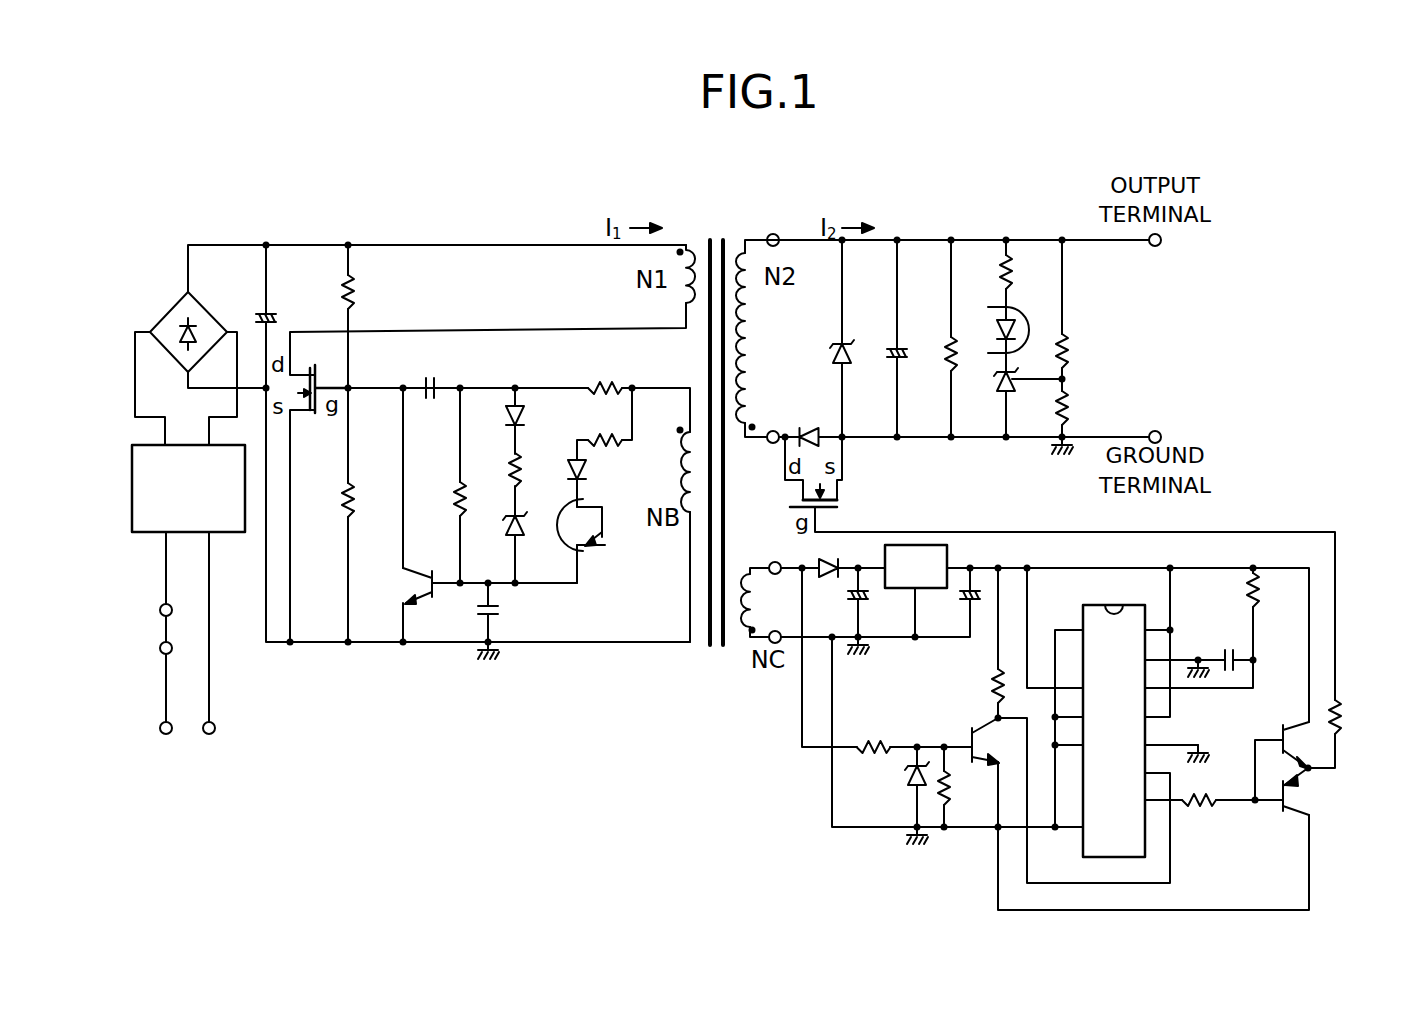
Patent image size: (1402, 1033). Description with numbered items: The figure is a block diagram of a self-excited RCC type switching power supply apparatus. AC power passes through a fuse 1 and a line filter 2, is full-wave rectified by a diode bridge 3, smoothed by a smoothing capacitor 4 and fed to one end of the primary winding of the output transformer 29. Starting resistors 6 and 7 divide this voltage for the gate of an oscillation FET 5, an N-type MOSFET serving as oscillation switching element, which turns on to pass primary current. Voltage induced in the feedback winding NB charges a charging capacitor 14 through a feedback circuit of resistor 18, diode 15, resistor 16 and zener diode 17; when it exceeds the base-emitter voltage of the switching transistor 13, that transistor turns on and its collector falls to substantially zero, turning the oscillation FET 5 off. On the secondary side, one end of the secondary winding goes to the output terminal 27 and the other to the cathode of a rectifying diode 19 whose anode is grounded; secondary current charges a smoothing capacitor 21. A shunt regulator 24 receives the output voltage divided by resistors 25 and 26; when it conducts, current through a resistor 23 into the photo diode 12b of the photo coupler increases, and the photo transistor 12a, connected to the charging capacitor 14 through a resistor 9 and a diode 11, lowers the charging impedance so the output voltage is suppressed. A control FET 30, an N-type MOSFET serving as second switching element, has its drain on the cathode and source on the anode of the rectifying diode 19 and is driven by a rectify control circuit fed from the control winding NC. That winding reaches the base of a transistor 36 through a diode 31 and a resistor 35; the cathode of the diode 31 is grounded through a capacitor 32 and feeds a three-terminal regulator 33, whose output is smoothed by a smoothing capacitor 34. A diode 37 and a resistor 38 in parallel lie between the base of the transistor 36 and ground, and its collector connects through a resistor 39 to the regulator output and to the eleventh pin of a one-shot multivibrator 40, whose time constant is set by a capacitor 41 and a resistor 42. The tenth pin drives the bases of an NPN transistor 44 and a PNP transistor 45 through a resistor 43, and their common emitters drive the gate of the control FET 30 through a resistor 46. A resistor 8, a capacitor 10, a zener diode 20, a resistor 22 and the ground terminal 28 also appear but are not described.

The fuse 1 is at (172, 628).
The line filter 2 is at (228, 533).
The diode bridge 3 is at (205, 312).
The smoothing capacitor 4 is at (272, 312).
The oscillation FET 5 is at (300, 415).
The starting resistor 6 is at (360, 292).
The starting resistor 7 is at (345, 518).
The resistor 8 is at (603, 372).
The resistor 9 is at (598, 425).
The capacitor 10 is at (428, 376).
The diode 11 is at (590, 470).
The photo transistor 12a is at (605, 548).
The photo diode 12b is at (1020, 323).
The switching transistor 13 is at (408, 574).
The charging capacitor 14 is at (500, 610).
The diode 15 is at (526, 415).
The resistor 16 is at (509, 462).
The zener diode 17 is at (508, 525).
The resistor 18 is at (455, 518).
The rectifying diode 19 is at (810, 428).
The zener diode 20 is at (835, 349).
The smoothing capacitor 21 is at (890, 365).
The resistor 22 is at (945, 368).
The resistor 23 is at (995, 279).
The shunt regulator 24 is at (998, 386).
The resistor 25 is at (1072, 346).
The resistor 26 is at (1072, 404).
The output terminal 27 is at (1159, 246).
The ground terminal 28 is at (1159, 431).
The output transformer 29 is at (718, 240).
The control FET 30 is at (845, 476).
The diode 31 is at (818, 560).
The capacitor 32 is at (849, 600).
The three-terminal regulator 33 is at (918, 545).
The smoothing capacitor 34 is at (961, 600).
The resistor 35 is at (873, 732).
The transistor 36 is at (968, 740).
The diode 37 is at (907, 776).
The resistor 38 is at (955, 788).
The resistor 39 is at (990, 685).
The one-shot multivibrator 40 is at (1112, 604).
The capacitor 41 is at (1228, 646).
The resistor 42 is at (1262, 592).
The resistor 43 is at (1200, 810).
The NPN transistor 44 is at (1278, 735).
The PNP transistor 45 is at (1311, 782).
The resistor 46 is at (1345, 718).